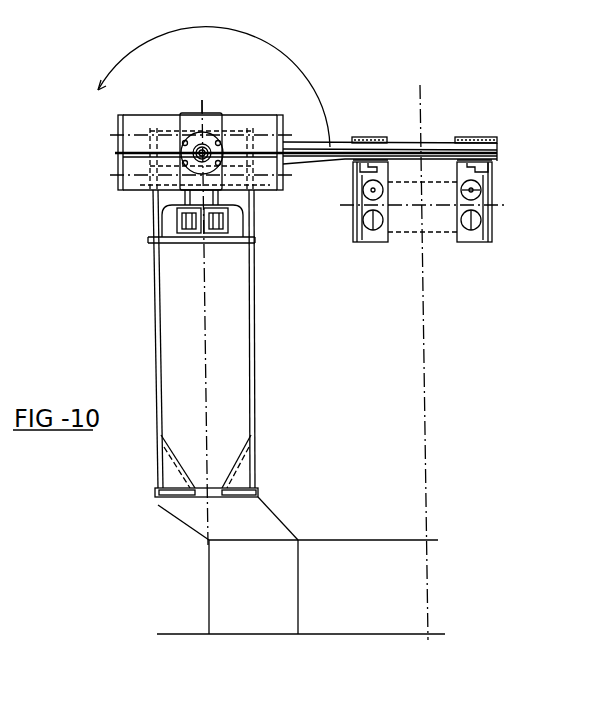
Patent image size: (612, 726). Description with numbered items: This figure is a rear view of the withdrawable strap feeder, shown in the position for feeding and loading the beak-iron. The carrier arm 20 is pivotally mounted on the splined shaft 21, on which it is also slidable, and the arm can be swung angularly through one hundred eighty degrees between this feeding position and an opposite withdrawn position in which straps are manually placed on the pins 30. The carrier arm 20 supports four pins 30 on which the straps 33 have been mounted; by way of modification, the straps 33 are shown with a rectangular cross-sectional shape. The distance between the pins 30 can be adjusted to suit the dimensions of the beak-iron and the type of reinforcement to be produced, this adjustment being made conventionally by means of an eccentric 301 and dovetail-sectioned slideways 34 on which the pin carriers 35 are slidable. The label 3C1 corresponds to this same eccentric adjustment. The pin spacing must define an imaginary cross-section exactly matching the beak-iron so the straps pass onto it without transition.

The carrier arm 20 is at (397, 145).
The splined shaft 21 is at (205, 146).
The pins 30 is at (373, 236).
The eccentric 301 is at (537, 263).
The roller 3C1 is at (483, 192).
The straps 33 is at (480, 208).
The dovetail-sectioned slideways 34 is at (495, 140).
The pin carriers 35 is at (491, 168).